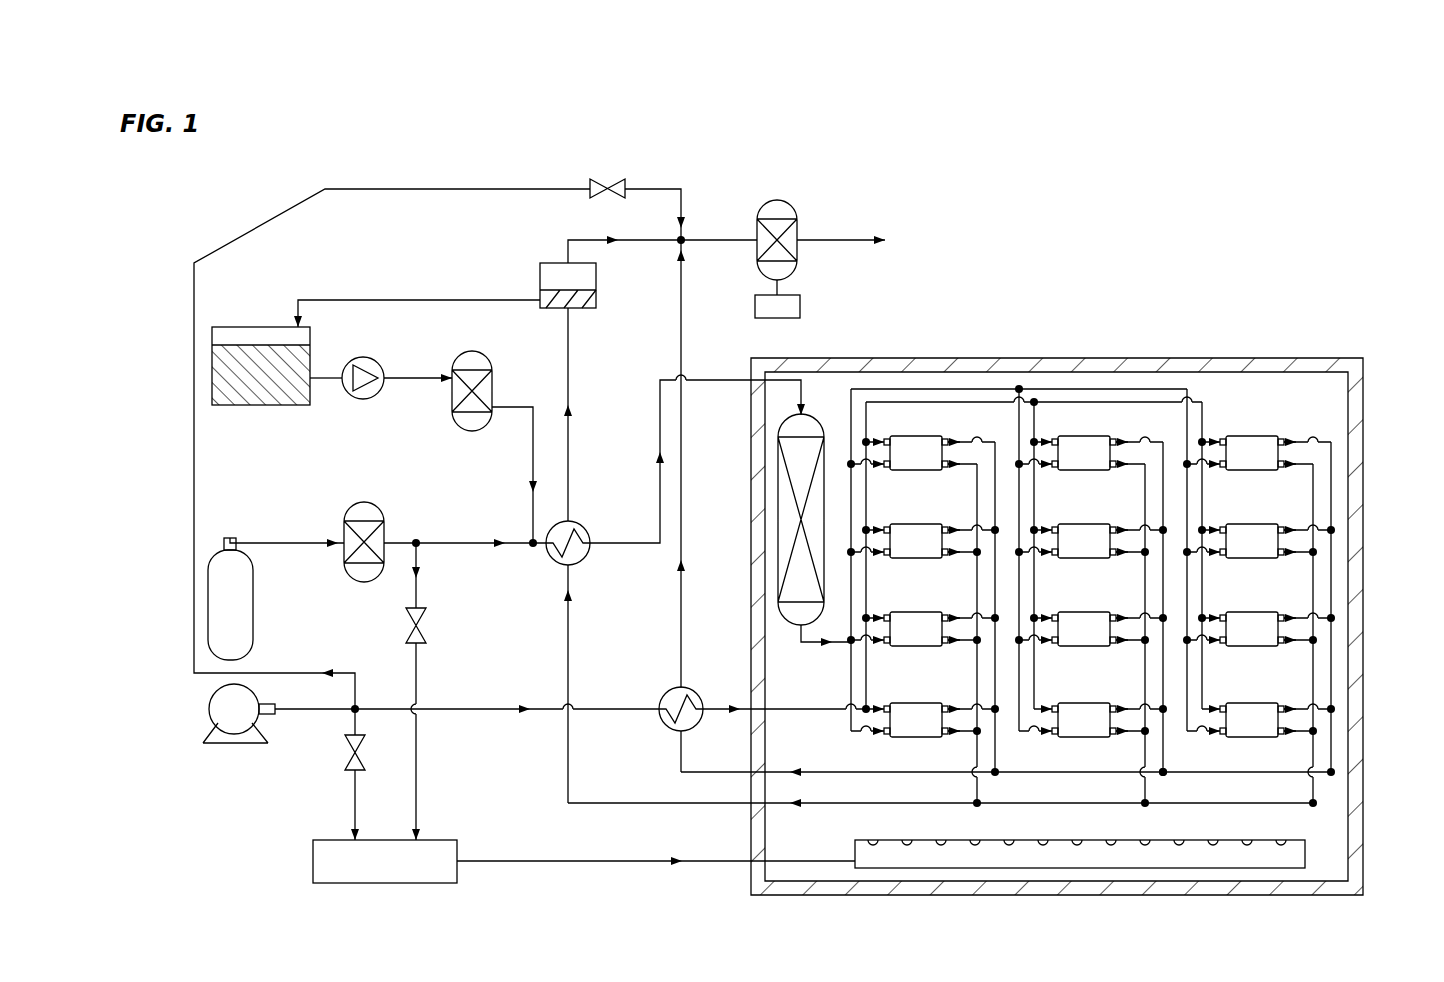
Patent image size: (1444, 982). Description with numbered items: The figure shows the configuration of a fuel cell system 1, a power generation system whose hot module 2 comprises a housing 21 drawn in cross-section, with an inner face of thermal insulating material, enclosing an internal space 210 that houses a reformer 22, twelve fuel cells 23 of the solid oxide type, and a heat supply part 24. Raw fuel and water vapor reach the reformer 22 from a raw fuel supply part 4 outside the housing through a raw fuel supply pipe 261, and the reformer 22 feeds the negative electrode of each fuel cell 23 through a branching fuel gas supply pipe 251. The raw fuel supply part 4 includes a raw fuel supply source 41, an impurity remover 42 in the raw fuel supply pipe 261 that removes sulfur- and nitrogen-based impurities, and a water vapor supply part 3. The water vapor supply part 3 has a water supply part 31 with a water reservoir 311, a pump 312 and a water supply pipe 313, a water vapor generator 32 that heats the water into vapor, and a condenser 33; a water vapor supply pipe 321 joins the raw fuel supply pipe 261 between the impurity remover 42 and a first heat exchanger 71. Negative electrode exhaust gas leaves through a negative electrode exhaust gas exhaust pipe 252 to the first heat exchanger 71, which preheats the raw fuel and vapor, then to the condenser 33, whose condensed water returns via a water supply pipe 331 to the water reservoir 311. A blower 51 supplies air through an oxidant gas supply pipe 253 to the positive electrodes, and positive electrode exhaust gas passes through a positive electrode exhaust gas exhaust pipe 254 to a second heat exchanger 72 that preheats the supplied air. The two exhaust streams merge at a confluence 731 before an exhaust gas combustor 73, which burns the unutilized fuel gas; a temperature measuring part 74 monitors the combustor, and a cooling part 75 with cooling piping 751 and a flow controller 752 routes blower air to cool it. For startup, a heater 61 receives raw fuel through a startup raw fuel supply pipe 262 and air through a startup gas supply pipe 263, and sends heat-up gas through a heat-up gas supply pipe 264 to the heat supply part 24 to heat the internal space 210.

The fuel cell system 1 is at (228, 196).
The hot module 2 is at (1341, 288).
The housing 21 is at (1357, 396).
The internal space 210 is at (1336, 403).
The reformer 22 is at (814, 413).
The fuel cells 23 is at (913, 441).
The heat supply part 24 is at (1305, 857).
The fuel gas supply pipe 251 is at (810, 648).
The negative electrode exhaust gas exhaust pipe 252 is at (835, 806).
The oxidant gas supply pipe 253 is at (788, 713).
The positive electrode exhaust gas exhaust pipe 254 is at (832, 773).
The raw fuel supply pipe 261 is at (660, 418).
The startup raw fuel supply pipe 262 is at (418, 673).
The startup gas supply pipe 263 is at (355, 795).
The heat-up gas supply pipe 264 is at (715, 859).
The water vapor supply part 3 is at (412, 250).
The water supply part 31 is at (271, 311).
The water reservoir 311 is at (252, 405).
The pump 312 is at (363, 357).
The water supply pipe 313 is at (422, 376).
The water vapor generator 32 is at (452, 402).
The water vapor supply pipe 321 is at (522, 405).
The condenser 33 is at (538, 275).
The water supply pipe 331 is at (497, 300).
The raw fuel supply part 4 is at (274, 511).
The raw fuel supply source 41 is at (255, 588).
The impurity remover 42 is at (362, 502).
The blower 51 is at (240, 745).
The heater 61 is at (313, 860).
The first heat exchanger 71 is at (585, 560).
The second heat exchanger 72 is at (665, 700).
The exhaust gas combustor 73 is at (800, 226).
The confluence 731 is at (688, 247).
The temperature measuring part 74 is at (800, 303).
The cooling part 75 is at (768, 190).
The cooling piping 751 is at (684, 203).
The flow controller 752 is at (600, 197).